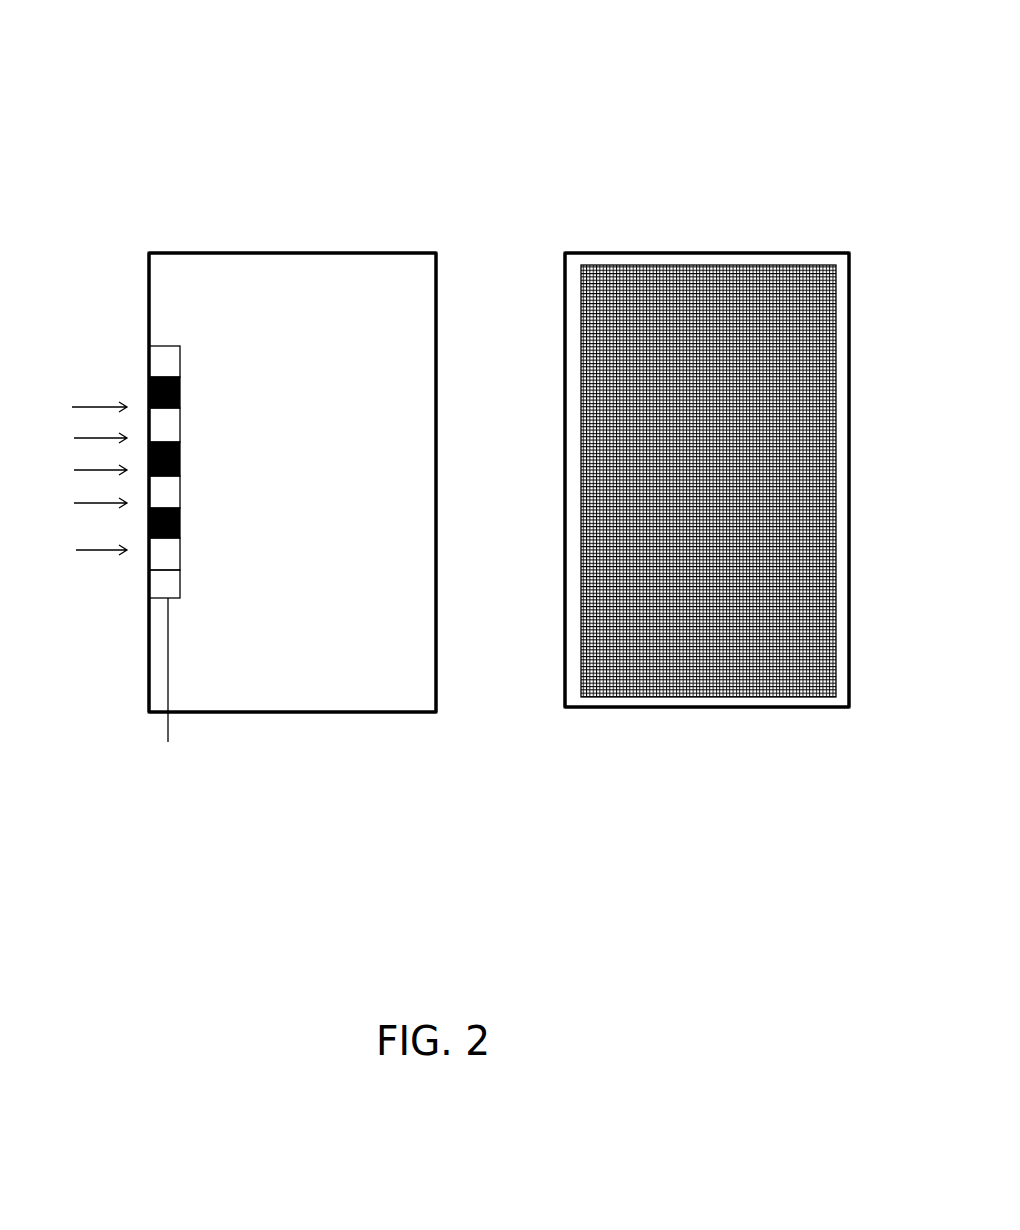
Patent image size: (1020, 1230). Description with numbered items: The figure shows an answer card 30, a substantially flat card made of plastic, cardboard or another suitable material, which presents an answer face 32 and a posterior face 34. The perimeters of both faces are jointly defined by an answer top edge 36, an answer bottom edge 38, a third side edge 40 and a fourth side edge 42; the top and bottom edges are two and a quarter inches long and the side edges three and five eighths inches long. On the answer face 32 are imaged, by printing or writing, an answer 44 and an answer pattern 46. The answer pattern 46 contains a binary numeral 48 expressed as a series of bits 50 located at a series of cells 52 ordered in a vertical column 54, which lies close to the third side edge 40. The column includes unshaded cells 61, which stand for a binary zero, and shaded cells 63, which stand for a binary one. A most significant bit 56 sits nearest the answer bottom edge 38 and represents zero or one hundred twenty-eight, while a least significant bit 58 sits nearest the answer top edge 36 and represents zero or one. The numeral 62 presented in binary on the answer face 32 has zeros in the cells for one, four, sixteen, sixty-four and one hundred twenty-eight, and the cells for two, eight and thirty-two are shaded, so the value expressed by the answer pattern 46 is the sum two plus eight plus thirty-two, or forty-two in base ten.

The answer card 30 is at (511, 88).
The answer face 32 is at (305, 278).
The posterior face 34 is at (757, 266).
The answer top edge 36 is at (600, 253).
The answer bottom edge 38 is at (625, 707).
The third side edge 40 is at (149, 655).
The fourth side edge 42 is at (563, 447).
The answer 44 is at (313, 430).
The answer pattern 46 is at (87, 407).
The binary numeral 48 is at (88, 438).
The bits 50 is at (88, 470).
The cells 52 is at (88, 503).
The vertical column 54 is at (164, 683).
The most significant bit 56 is at (160, 587).
The least significant bit 58 is at (160, 360).
The unshaded cells 61 is at (160, 423).
The numeral 62 is at (127, 554).
The shaded cells 63 is at (148, 392).